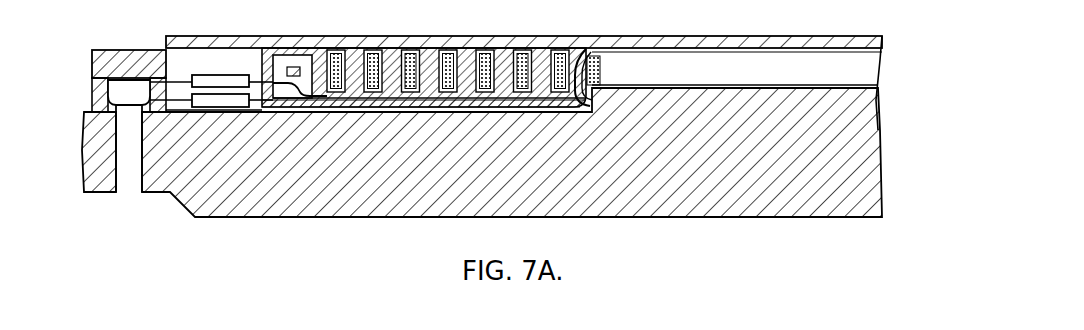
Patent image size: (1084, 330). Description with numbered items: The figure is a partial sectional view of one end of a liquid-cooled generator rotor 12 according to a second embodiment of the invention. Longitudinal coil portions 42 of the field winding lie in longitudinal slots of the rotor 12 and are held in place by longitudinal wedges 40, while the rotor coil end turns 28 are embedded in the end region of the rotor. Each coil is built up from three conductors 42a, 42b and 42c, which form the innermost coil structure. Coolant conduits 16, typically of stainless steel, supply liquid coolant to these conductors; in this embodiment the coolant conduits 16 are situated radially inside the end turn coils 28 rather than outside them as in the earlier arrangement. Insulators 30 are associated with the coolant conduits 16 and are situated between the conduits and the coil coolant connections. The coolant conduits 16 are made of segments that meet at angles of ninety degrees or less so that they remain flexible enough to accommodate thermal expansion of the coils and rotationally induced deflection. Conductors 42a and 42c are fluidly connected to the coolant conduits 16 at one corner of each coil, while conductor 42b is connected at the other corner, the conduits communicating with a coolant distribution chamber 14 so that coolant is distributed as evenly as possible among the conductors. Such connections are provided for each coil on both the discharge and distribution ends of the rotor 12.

The generator rotor 12 is at (692, 197).
The coolant distribution chamber 14 is at (113, 91).
The coolant conduits 16 is at (489, 108).
The rotor coil end turns 28 is at (446, 50).
The insulators 30 is at (228, 100).
The longitudinal wedges 40 is at (501, 43).
The longitudinal coil portions 42 is at (713, 62).
The conductor 42a is at (598, 58).
The conductor 42b is at (608, 62).
The conductor 42c is at (601, 78).